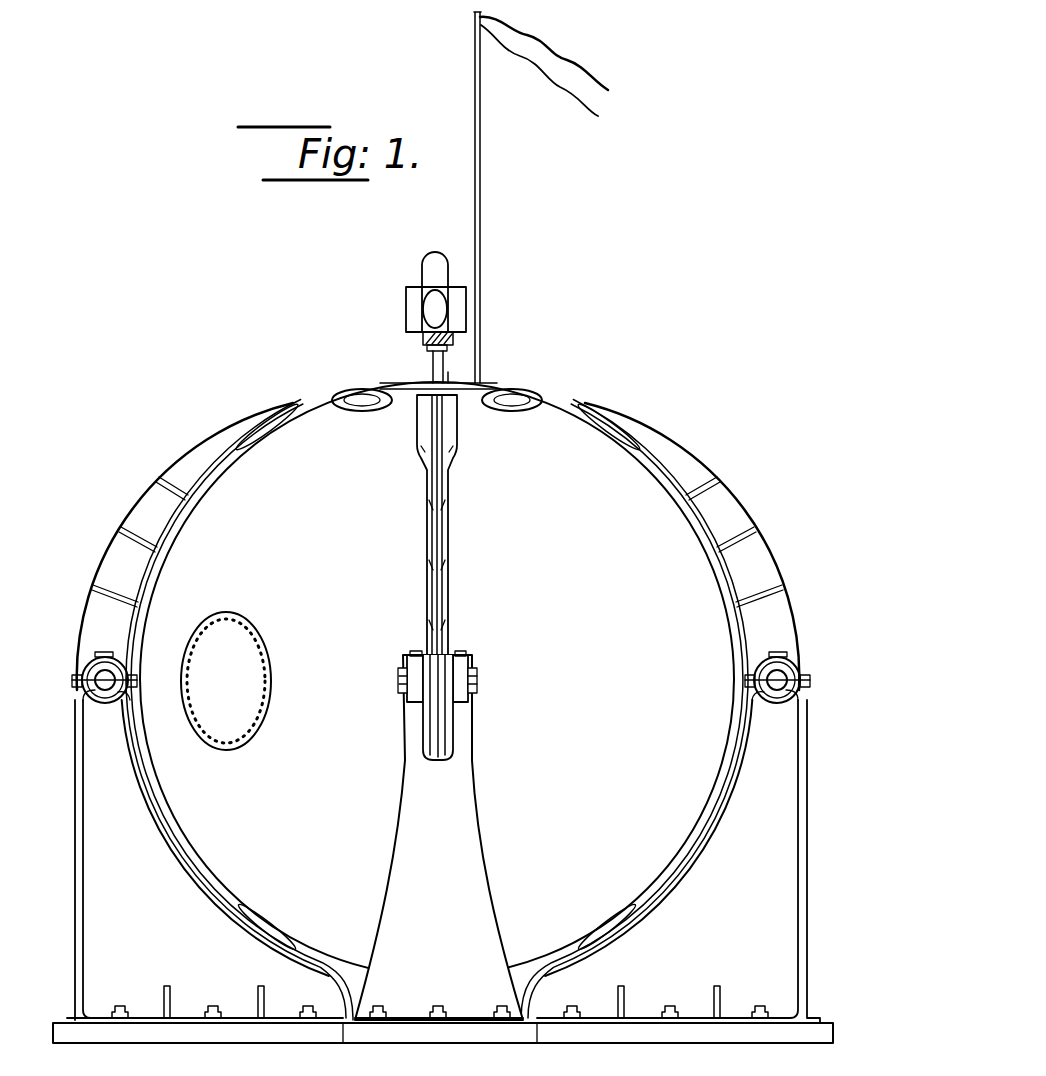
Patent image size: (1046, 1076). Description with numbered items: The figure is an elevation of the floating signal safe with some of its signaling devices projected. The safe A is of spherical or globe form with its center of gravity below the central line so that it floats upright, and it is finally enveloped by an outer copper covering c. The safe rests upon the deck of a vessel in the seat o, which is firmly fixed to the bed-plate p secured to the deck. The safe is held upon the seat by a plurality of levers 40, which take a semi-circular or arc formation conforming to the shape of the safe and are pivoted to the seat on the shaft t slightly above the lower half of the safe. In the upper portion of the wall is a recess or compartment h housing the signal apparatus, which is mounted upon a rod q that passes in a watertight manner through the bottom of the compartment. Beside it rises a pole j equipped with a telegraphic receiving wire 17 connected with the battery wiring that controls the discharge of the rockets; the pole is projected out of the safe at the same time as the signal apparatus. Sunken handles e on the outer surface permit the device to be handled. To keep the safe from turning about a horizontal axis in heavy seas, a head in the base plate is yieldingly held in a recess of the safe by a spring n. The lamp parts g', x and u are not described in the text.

The telegraphic receiving wire 17 is at (586, 78).
The lamp bulb g' is at (426, 281).
The lamp housing x is at (410, 307).
The lamp lens u is at (433, 306).
The pole j is at (481, 330).
The rod q is at (432, 372).
The recess or compartment h is at (449, 380).
The sunken handles e is at (360, 400).
The spring n is at (417, 447).
The safe A is at (437, 679).
The outer copper covering c is at (437, 710).
The levers 40 is at (132, 521).
The shaft t is at (94, 680).
The seat o is at (442, 969).
The bed-plate p is at (205, 1035).